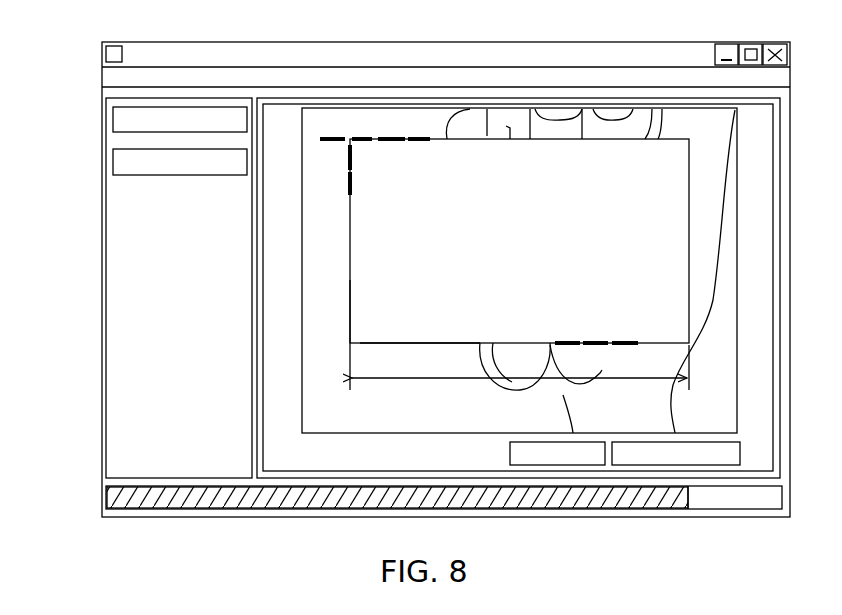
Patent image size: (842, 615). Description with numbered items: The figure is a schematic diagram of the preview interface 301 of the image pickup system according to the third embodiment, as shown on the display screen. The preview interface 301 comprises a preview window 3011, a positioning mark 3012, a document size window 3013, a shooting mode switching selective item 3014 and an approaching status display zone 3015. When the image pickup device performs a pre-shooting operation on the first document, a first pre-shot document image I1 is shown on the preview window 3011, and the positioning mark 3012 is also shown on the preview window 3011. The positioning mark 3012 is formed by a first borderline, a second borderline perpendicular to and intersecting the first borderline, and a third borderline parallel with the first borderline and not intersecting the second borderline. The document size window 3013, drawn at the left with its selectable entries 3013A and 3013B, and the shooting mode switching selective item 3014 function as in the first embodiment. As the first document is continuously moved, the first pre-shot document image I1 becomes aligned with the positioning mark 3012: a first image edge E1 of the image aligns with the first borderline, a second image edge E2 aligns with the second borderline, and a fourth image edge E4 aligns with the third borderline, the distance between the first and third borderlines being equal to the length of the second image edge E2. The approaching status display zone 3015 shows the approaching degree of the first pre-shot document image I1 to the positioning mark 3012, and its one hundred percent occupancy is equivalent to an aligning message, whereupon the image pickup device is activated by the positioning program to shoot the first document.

The preview interface 301 is at (617, 80).
The preview window 3011 is at (358, 403).
The positioning mark 3012 is at (413, 133).
The document size window 3013 is at (128, 288).
The business card option 3013A is at (118, 122).
The A4-size document option 3013B is at (116, 158).
The shooting mode switching selective item 3014 is at (690, 455).
The approaching status display zone 3015 is at (213, 500).
The first image edge E1 is at (486, 108).
The second image edge E2 is at (348, 282).
The fourth image edge E4 is at (383, 343).
The first pre-shot document image I1 is at (413, 325).